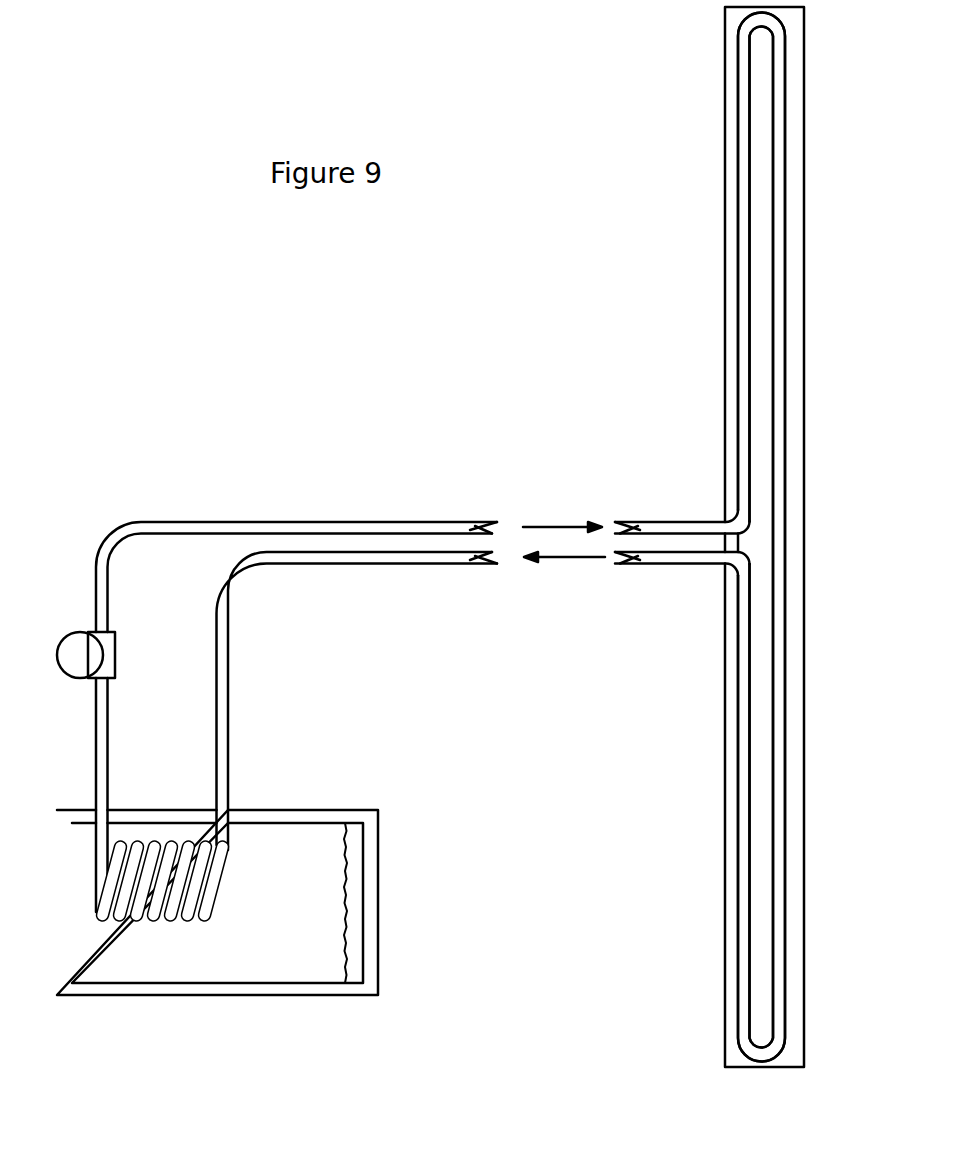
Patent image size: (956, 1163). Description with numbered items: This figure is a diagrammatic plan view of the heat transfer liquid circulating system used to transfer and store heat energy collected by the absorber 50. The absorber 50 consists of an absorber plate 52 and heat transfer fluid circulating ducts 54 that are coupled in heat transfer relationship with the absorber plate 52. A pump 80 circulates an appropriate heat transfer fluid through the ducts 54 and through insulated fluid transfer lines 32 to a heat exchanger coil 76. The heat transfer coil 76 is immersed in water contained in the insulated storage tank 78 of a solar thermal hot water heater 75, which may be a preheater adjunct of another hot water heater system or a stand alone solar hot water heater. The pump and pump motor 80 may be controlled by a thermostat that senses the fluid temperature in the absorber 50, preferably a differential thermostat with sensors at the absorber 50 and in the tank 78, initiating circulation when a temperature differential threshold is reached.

The insulated fluid transfer lines 32 is at (705, 530).
The absorber 50 is at (777, 333).
The absorber plate 52 is at (712, 821).
The heat transfer fluid circulating ducts 54 is at (748, 235).
The solar thermal hot water heater 75 is at (312, 1000).
The heat exchanger coil 76 is at (222, 882).
The insulated storage tank 78 is at (218, 999).
The pump 80 is at (62, 668).